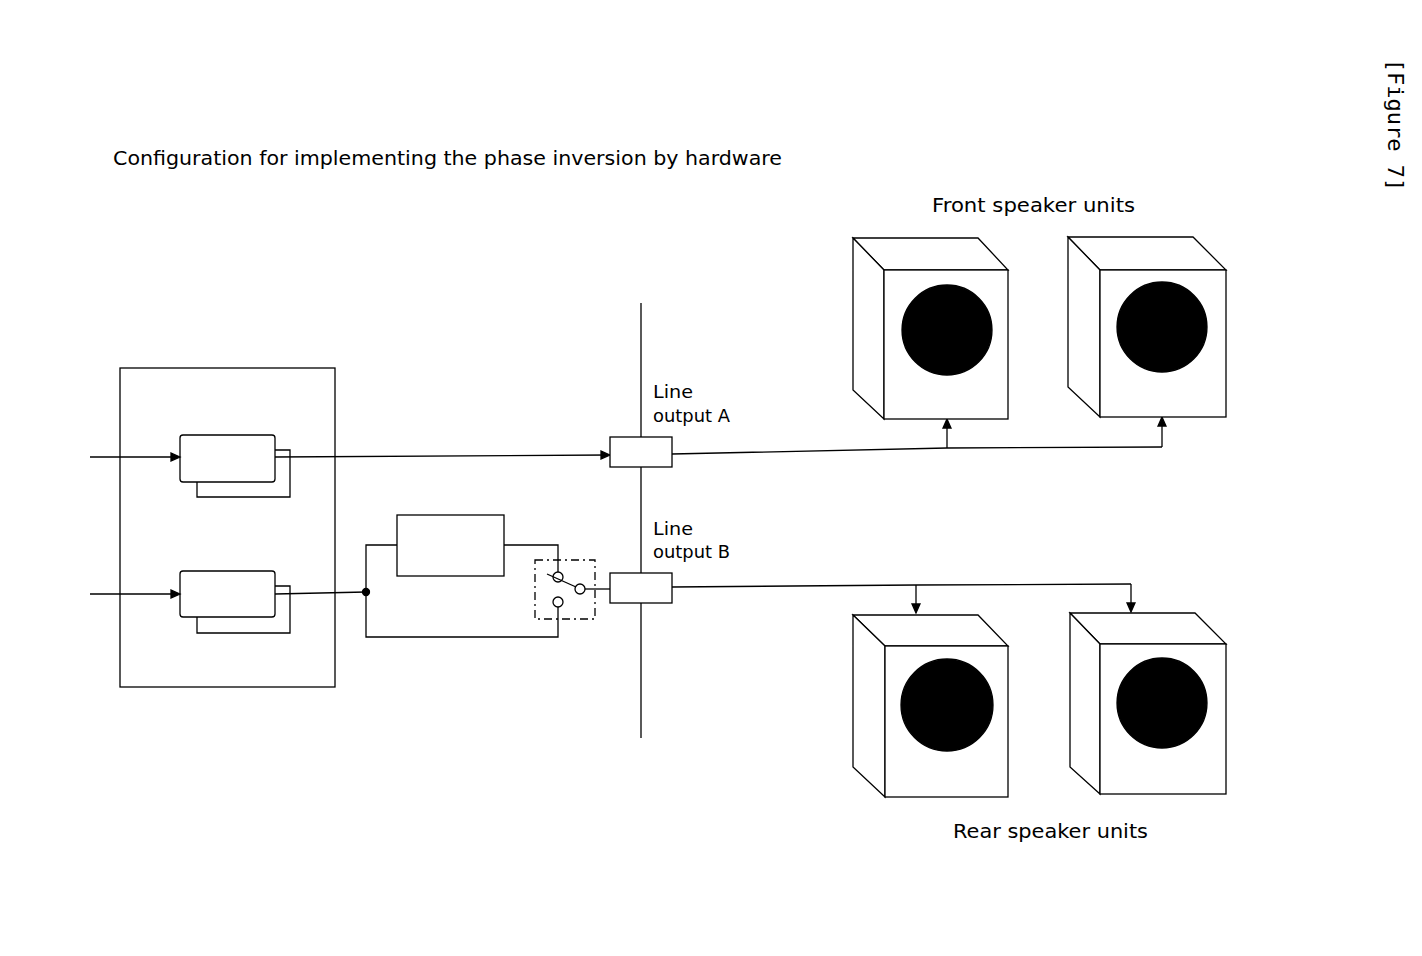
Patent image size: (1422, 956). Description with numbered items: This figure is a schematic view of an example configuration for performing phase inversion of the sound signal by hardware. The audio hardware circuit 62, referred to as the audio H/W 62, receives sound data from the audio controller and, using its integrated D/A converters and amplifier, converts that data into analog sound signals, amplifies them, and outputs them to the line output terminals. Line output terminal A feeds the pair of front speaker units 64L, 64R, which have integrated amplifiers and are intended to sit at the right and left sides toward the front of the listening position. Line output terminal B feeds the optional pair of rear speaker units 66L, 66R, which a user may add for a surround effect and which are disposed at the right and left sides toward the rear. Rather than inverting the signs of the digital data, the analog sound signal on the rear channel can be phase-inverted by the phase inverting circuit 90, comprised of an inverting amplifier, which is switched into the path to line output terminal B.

The audio hardware circuit 62 is at (337, 383).
The phase inverting circuit 90 is at (467, 515).
The front speaker unit 64L is at (852, 317).
The front speaker unit 64R is at (1227, 312).
The rear speaker unit 66L is at (868, 703).
The rear speaker unit 66R is at (1225, 703).